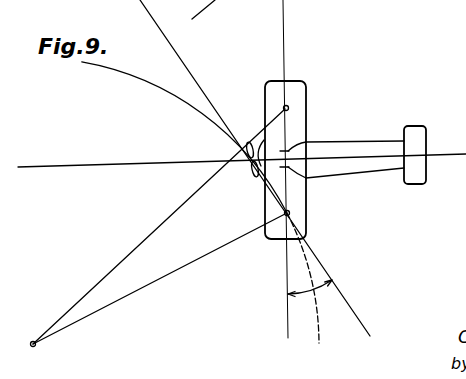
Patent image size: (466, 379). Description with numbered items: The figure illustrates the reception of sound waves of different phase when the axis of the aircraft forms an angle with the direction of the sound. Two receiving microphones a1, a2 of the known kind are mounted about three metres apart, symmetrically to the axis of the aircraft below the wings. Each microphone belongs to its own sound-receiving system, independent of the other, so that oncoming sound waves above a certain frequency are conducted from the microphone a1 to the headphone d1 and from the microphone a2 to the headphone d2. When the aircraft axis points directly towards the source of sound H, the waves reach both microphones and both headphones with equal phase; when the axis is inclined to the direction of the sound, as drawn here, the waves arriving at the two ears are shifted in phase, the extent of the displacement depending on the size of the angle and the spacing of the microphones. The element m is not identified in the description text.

The receiving microphone a1 is at (288, 107).
The receiving microphone a2 is at (290, 213).
The headphone d1 is at (306, 142).
The headphone d2 is at (308, 181).
The guide block m is at (387, 162).
The source of sound H is at (36, 345).